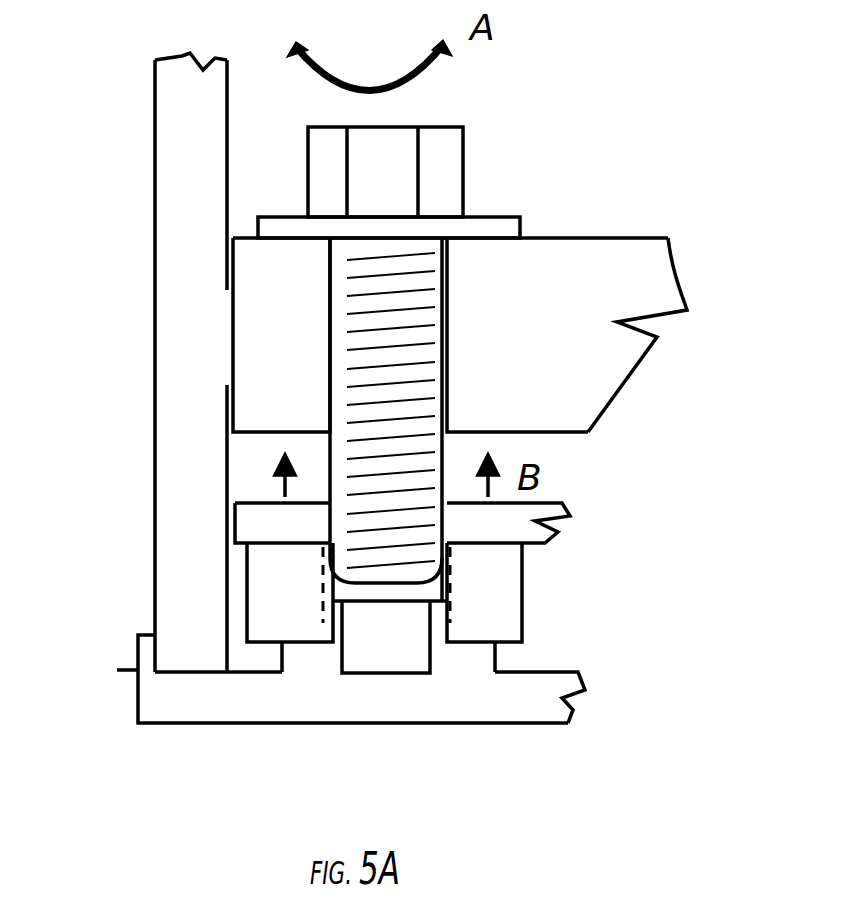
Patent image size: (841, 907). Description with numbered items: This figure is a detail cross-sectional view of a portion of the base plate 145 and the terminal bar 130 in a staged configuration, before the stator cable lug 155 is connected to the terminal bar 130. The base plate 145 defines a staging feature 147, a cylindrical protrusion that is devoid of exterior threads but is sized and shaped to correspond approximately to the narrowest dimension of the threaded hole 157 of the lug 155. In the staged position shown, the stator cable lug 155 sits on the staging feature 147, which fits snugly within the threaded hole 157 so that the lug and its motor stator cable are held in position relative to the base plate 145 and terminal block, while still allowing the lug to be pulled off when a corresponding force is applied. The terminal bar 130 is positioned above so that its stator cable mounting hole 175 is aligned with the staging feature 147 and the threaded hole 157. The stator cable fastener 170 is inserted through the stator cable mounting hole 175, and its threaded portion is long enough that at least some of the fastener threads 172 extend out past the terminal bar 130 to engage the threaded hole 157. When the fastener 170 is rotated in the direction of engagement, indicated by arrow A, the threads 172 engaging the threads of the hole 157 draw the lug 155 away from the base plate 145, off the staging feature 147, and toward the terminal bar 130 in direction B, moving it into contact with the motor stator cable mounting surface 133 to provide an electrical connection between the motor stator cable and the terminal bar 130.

The terminal bar 130 is at (255, 331).
The motor stator cable mounting surface 133 is at (576, 436).
The base plate 145 is at (518, 698).
The staging feature 147 is at (442, 617).
The stator cable lug 155 is at (275, 572).
The threaded hole 157 is at (335, 585).
The stator cable fastener 170 is at (317, 168).
The fastener threads 172 is at (360, 445).
The stator cable mounting hole 175 is at (447, 335).